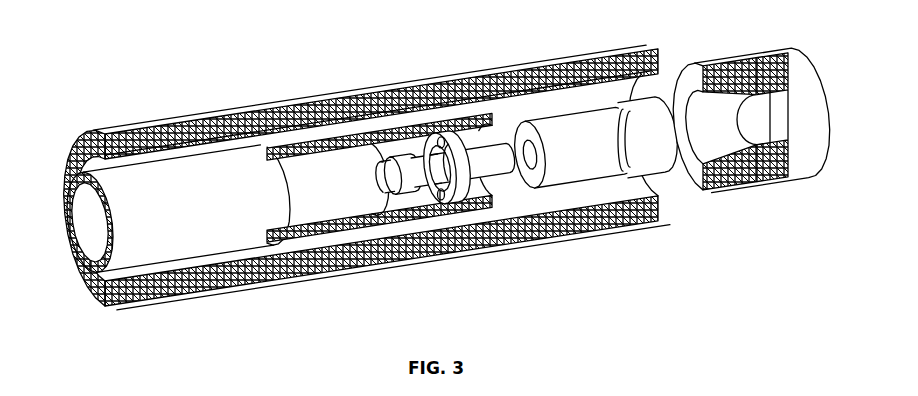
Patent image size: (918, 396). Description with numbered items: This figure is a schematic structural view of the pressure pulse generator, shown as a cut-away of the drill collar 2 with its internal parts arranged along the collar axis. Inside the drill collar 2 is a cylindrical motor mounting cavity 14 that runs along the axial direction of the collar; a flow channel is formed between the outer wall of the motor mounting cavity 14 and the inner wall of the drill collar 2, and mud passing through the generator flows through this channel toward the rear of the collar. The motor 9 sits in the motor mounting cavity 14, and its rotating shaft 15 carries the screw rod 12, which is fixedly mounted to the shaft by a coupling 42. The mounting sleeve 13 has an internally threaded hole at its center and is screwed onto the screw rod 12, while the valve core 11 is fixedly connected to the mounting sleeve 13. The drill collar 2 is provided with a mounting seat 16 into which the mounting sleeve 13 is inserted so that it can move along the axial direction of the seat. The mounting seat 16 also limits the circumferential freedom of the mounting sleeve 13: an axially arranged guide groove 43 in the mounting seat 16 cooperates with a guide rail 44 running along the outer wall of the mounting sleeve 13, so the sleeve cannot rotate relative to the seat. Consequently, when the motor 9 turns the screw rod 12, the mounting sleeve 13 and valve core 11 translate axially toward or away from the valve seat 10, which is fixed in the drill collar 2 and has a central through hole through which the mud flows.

The drill collar 2 is at (310, 118).
The motor 9 is at (323, 210).
The valve seat 10 is at (718, 183).
The valve core 11 is at (660, 137).
The screw rod 12 is at (430, 177).
The mounting sleeve 13 is at (567, 157).
The motor mounting cavity 14 is at (207, 195).
The rotating shaft 15 is at (388, 177).
The mounting seat 16 is at (460, 147).
The coupling 42 is at (397, 173).
The guide groove 43 is at (440, 153).
The guide rail 44 is at (620, 172).